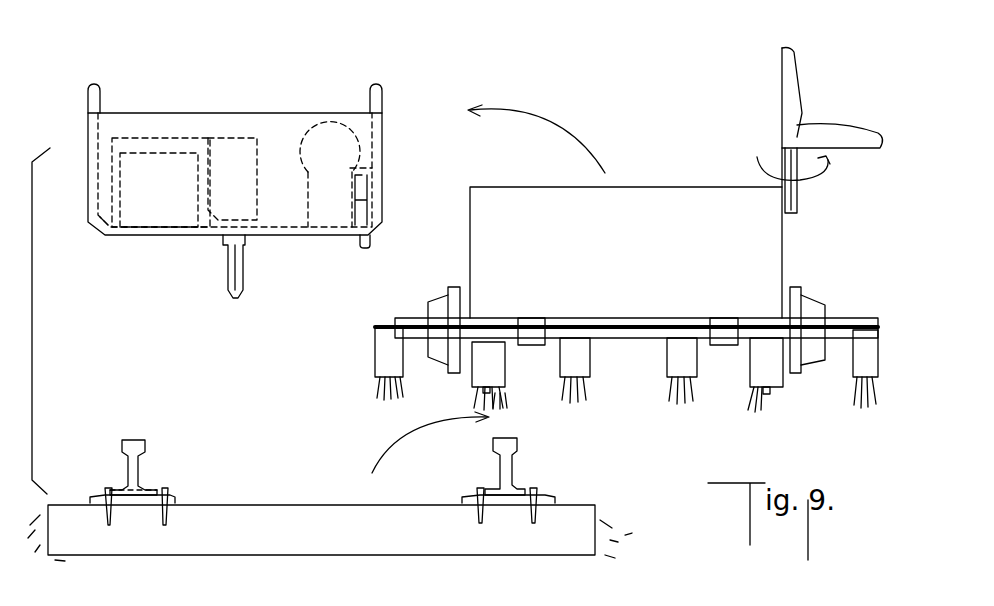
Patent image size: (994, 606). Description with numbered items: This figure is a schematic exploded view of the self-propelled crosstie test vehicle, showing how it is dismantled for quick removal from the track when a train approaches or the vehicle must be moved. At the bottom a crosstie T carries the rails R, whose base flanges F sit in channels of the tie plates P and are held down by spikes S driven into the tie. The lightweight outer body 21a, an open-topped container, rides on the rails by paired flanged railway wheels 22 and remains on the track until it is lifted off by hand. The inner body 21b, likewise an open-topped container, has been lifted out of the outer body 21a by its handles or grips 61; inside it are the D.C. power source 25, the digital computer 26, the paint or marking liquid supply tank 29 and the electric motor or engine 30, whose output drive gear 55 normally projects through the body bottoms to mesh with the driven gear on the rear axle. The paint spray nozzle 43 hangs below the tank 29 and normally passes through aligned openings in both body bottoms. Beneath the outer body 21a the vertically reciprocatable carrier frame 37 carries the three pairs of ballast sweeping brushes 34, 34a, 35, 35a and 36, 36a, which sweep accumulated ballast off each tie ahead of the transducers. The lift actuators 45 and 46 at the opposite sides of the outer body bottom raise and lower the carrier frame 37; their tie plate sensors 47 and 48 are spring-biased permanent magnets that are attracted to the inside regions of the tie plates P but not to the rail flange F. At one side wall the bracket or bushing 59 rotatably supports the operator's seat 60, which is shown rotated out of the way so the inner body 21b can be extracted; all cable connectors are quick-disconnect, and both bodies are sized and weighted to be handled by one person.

The inner frame or body 21b is at (293, 113).
The outer frame or body 21a is at (470, 230).
The handles or grips 61 is at (100, 92).
The digital computer 26 is at (170, 136).
The D.C. power source 25 is at (145, 227).
The paint or marking liquid supply tank 29 is at (237, 137).
The paint spray nozzle 43 is at (237, 273).
The electric motor or engine 30 is at (340, 116).
The output or drive gear 55 is at (375, 180).
The operator's seat 60 is at (842, 137).
The bracket or bushing 59 is at (800, 203).
The carrier frame 37 is at (635, 335).
The flanged railway wheels 22 is at (432, 307).
The ballast sweeping brush 36 is at (378, 393).
The lift actuator 46 is at (488, 350).
The tie plate sensor 48 is at (483, 398).
The ballast sweeping brush 36a is at (500, 393).
The ballast sweeping brush 35 is at (587, 398).
The ballast sweeping brush 35a is at (673, 387).
The lift actuator 45 is at (763, 347).
The tie plate sensor 47 is at (770, 393).
The ballast sweeping brush 34 is at (752, 387).
The ballast sweeping brush 34a is at (863, 388).
The railroad crosstie T is at (393, 545).
The rail R is at (140, 468).
The base flange F is at (152, 488).
The tie plate P is at (182, 498).
The spike S is at (110, 510).